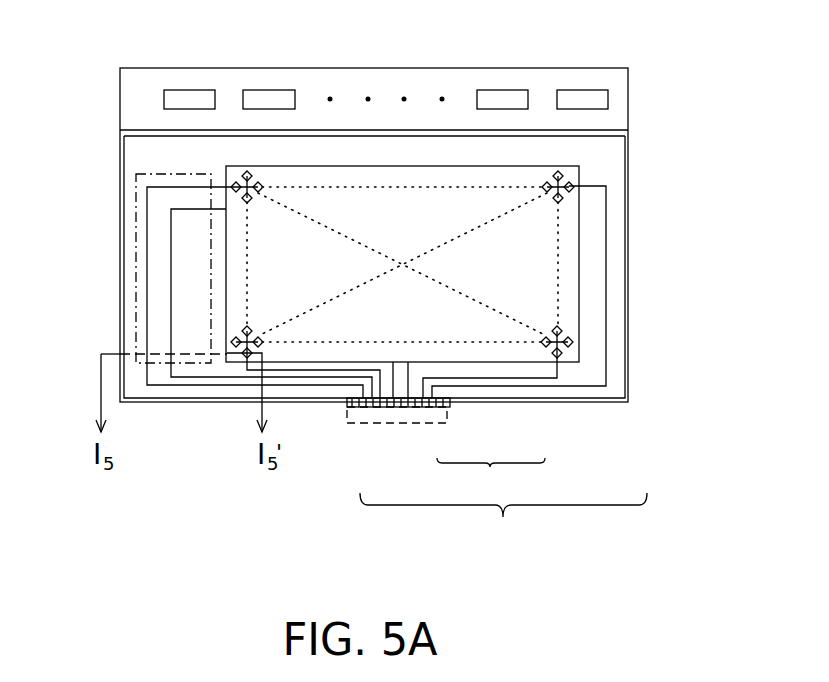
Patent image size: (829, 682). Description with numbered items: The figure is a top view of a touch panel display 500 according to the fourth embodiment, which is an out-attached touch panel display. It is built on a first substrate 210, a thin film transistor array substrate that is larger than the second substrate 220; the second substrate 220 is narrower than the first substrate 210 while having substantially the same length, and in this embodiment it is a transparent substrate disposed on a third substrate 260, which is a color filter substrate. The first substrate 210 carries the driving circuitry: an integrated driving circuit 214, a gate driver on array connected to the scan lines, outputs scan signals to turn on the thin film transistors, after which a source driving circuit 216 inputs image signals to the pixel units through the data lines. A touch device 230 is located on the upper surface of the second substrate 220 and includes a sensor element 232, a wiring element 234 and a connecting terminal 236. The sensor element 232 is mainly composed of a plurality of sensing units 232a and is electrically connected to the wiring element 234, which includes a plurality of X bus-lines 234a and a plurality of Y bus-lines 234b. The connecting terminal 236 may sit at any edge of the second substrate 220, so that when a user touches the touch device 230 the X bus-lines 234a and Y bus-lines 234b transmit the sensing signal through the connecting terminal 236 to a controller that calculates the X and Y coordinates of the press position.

The first substrate 210 is at (629, 102).
The source driving circuit 216 is at (187, 98).
The second substrate 220 is at (629, 148).
The third substrate 260 is at (627, 262).
The integrated driving circuit 214 is at (137, 260).
The sensing units 232a is at (577, 342).
The sensor element 232 is at (567, 364).
The X bus-lines 234a is at (449, 405).
The Y bus-lines 234b is at (175, 386).
The wiring element 234 is at (491, 479).
The connecting terminal 236 is at (355, 425).
The touch device 230 is at (503, 524).
The touch panel display 500 is at (731, 546).